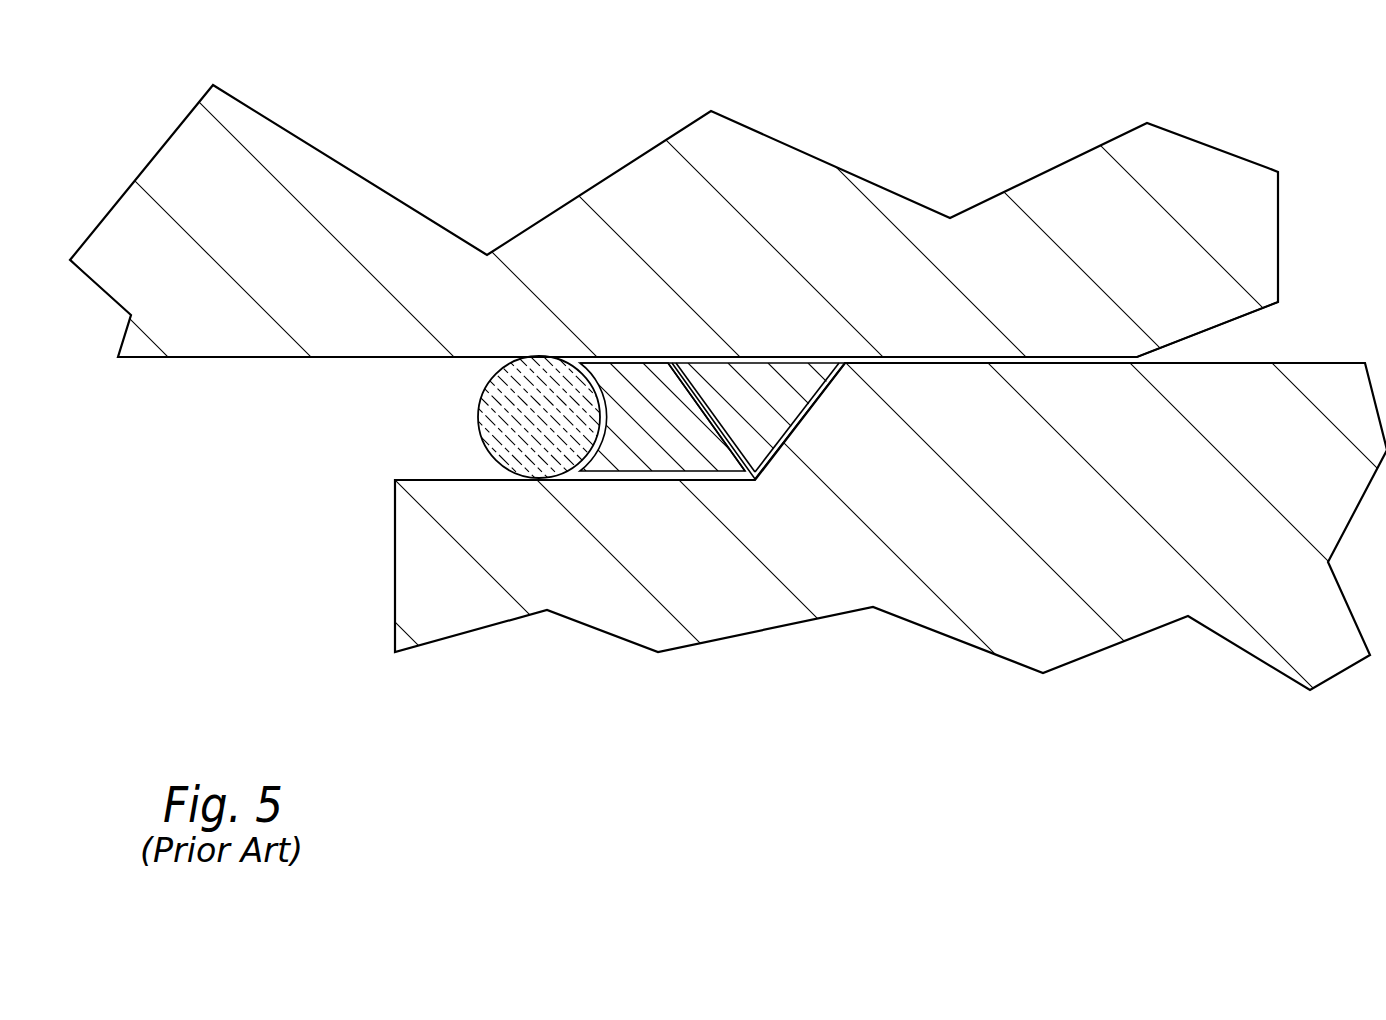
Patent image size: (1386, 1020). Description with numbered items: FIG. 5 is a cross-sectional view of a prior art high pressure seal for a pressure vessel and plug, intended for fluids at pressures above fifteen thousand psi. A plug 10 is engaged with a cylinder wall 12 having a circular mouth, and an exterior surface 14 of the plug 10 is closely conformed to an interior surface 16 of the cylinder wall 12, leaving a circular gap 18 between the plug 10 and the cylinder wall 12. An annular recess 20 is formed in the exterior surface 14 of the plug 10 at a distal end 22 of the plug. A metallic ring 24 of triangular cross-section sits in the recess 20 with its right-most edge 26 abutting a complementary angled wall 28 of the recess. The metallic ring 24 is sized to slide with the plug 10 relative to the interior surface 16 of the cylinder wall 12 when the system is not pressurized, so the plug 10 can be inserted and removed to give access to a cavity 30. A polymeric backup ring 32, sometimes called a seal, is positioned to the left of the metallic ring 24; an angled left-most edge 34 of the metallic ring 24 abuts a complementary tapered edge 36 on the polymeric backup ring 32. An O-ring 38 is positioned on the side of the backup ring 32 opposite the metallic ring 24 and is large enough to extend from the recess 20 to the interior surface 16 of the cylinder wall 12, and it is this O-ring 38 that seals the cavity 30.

The plug 10 is at (395, 578).
The cylinder wall 12 is at (1280, 235).
The exterior surface of the plug 14 is at (937, 357).
The interior surface of the cylinder wall 16 is at (1060, 363).
The circular gap 18 is at (1200, 348).
The annular recess 20 is at (435, 478).
The distal end of the plug 22 is at (425, 525).
The metallic ring 24 is at (755, 363).
The right-most edge of the metallic ring 26 is at (785, 440).
The angled wall of the recess 28 is at (797, 416).
The cavity 30 is at (190, 604).
The polymeric backup ring 32 is at (622, 363).
The left-most edge of the metallic ring 34 is at (685, 393).
The tapered edge of the polymeric backup ring 36 is at (722, 420).
The O-ring 38 is at (493, 378).